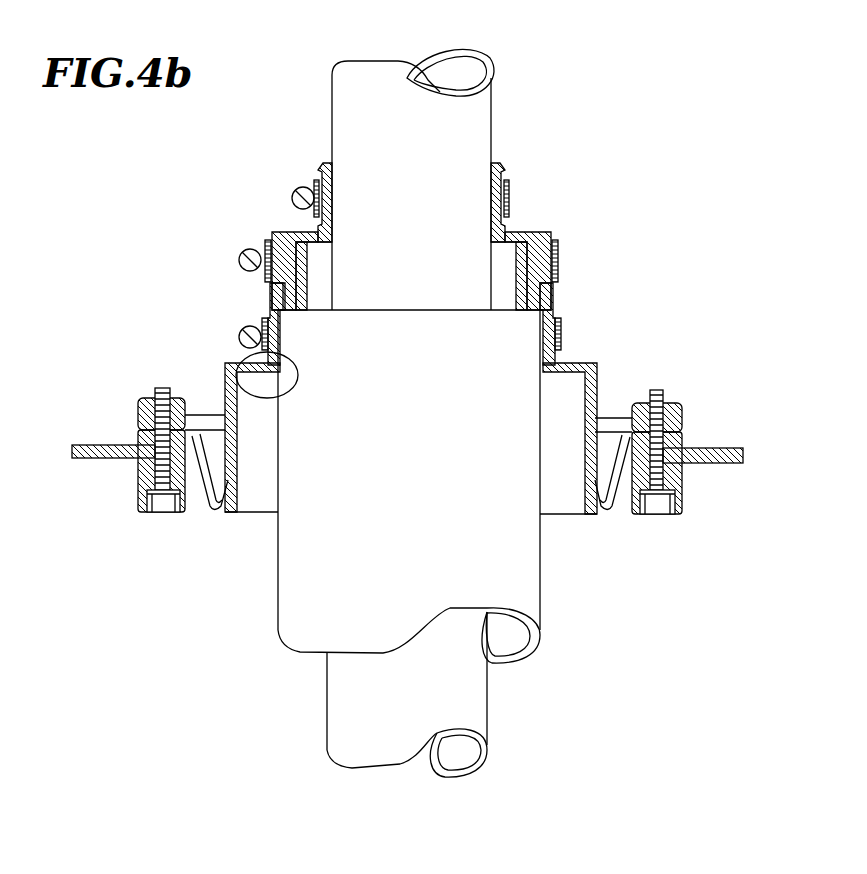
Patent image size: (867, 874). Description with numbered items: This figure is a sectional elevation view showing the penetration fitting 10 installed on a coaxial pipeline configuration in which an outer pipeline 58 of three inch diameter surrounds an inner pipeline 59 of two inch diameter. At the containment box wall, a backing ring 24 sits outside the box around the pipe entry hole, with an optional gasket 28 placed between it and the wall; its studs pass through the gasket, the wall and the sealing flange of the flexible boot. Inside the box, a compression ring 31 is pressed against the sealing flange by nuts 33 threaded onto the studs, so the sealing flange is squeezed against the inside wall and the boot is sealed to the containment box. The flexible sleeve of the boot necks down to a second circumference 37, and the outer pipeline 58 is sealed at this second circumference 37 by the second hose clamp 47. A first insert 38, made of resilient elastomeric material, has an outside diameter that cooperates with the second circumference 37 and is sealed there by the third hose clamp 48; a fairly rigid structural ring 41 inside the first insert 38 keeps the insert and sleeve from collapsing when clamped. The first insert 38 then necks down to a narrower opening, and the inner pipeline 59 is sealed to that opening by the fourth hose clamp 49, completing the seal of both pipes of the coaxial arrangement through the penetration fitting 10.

The penetration fitting 10 is at (612, 235).
The backing ring 24 is at (140, 500).
The gasket 28 is at (148, 462).
The compression ring 31 is at (682, 430).
The nuts 33 is at (138, 405).
The second circumference 37 is at (230, 388).
The first insert 38 is at (527, 233).
The structural ring 41 is at (490, 190).
The second hose clamp 47 is at (263, 327).
The third hose clamp 48 is at (268, 243).
The fourth hose clamp 49 is at (316, 182).
The outer pipeline 58 is at (540, 565).
The inner pipeline 59 is at (487, 700).